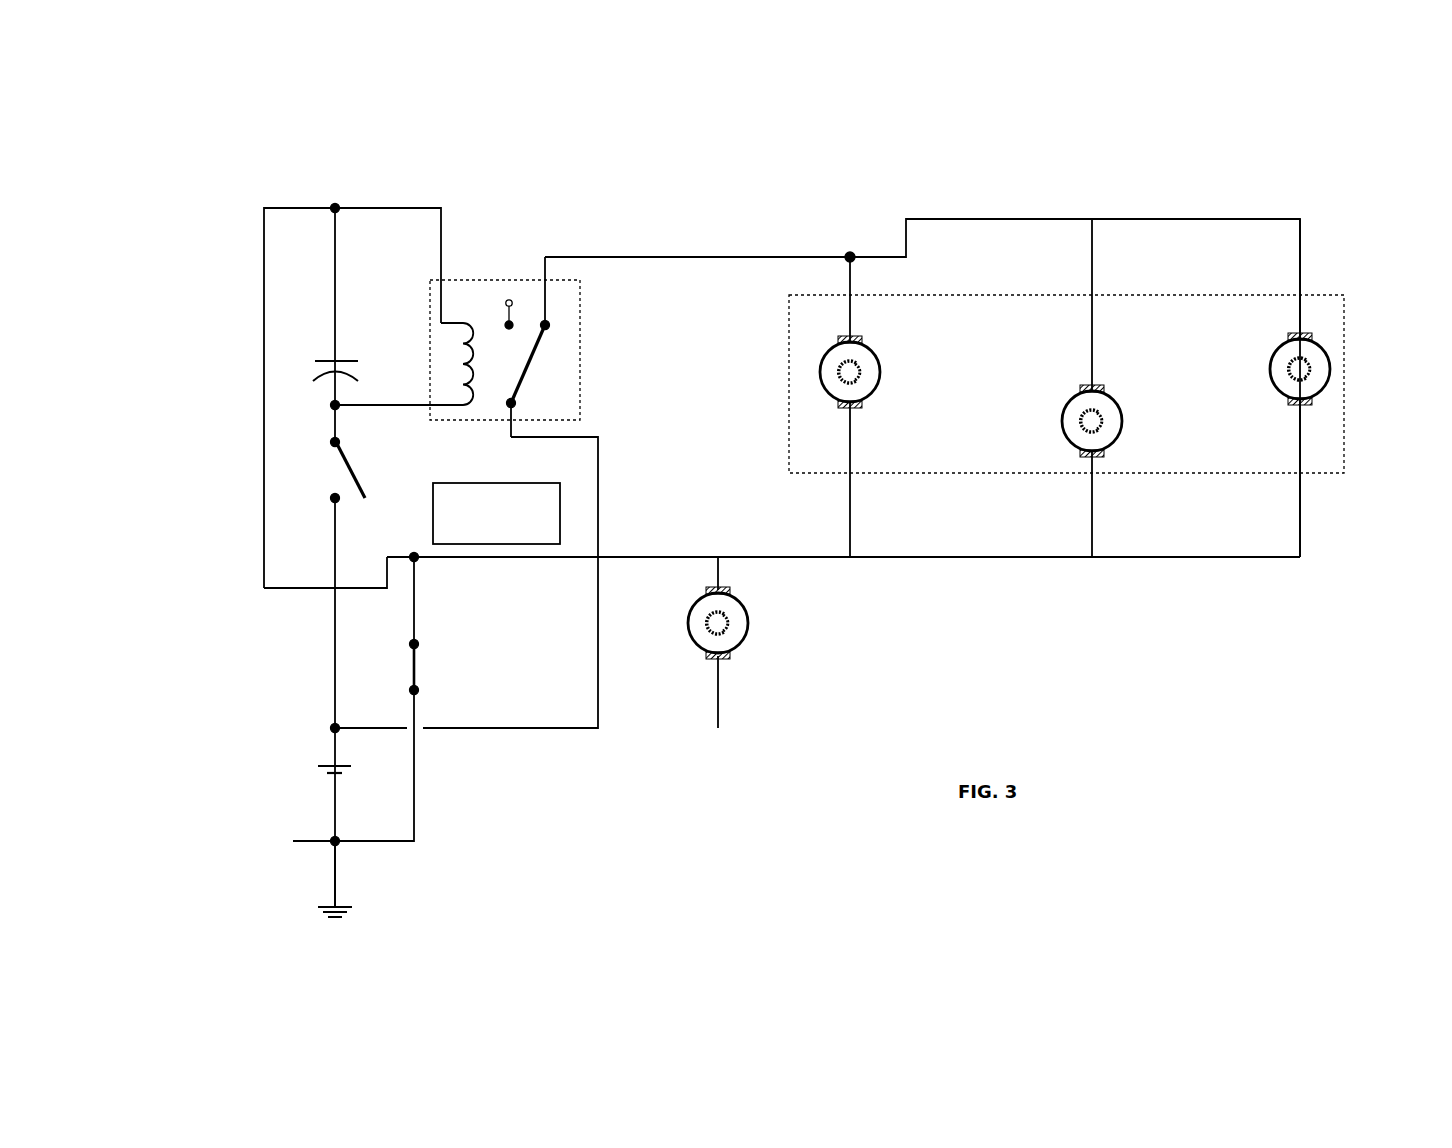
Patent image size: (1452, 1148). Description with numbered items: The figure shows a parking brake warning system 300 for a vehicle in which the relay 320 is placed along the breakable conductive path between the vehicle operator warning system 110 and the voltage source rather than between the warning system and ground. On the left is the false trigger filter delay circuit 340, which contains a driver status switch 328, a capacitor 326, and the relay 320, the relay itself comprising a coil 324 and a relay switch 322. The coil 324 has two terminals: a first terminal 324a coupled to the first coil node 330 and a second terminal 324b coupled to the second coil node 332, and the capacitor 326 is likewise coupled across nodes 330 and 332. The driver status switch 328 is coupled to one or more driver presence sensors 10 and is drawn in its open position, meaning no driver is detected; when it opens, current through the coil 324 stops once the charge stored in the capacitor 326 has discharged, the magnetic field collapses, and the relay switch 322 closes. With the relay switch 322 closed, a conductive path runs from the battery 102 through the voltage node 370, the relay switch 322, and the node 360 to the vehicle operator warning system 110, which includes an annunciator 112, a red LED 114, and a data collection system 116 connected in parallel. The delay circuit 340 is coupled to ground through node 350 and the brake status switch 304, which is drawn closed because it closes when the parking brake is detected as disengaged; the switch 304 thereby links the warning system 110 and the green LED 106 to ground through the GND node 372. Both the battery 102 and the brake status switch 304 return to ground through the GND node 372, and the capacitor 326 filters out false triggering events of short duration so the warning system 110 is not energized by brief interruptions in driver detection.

The parking brake warning system 300 is at (796, 568).
The false trigger filter delay circuit 340 is at (302, 156).
The first coil node 330 is at (335, 208).
The second coil node 332 is at (333, 403).
The capacitor 326 is at (347, 357).
The coil 324 is at (470, 337).
The first terminal 324a is at (449, 326).
The second terminal 324b is at (441, 400).
The relay 320 is at (582, 286).
The relay switch 322 is at (538, 343).
The driver status switch 328 is at (347, 468).
The driver presence sensor 10 is at (507, 483).
The node 350 is at (414, 557).
The brake status switch 304 is at (417, 660).
The voltage node 370 is at (335, 728).
The battery 102 is at (318, 766).
The ground node 372 is at (335, 841).
The node 360 is at (697, 257).
The vehicle operator warning system 110 is at (1323, 295).
The annunciator 112 is at (872, 353).
The LED 114 is at (1187, 397).
The data collection system 116 is at (1393, 345).
The green LED 106 is at (747, 623).